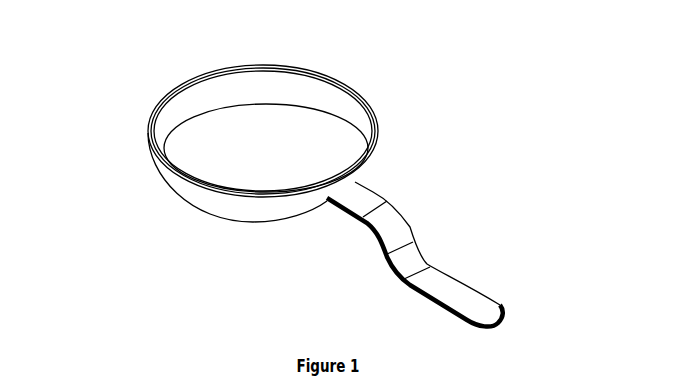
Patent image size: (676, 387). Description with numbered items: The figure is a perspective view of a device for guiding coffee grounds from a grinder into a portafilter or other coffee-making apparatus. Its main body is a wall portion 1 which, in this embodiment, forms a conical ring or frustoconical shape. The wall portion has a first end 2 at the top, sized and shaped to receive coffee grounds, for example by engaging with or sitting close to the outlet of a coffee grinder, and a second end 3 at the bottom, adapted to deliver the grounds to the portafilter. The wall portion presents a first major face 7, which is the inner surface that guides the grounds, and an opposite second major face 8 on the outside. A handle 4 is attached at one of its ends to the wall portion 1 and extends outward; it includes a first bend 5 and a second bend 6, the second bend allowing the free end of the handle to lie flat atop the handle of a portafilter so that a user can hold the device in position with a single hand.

The wall portion 1 is at (313, 72).
The first end 2 is at (153, 115).
The second end 3 is at (173, 190).
The handle 4 is at (458, 291).
The first bend 5 is at (360, 227).
The second bend 6 is at (440, 238).
The first major face 7 is at (330, 100).
The second major face 8 is at (222, 198).